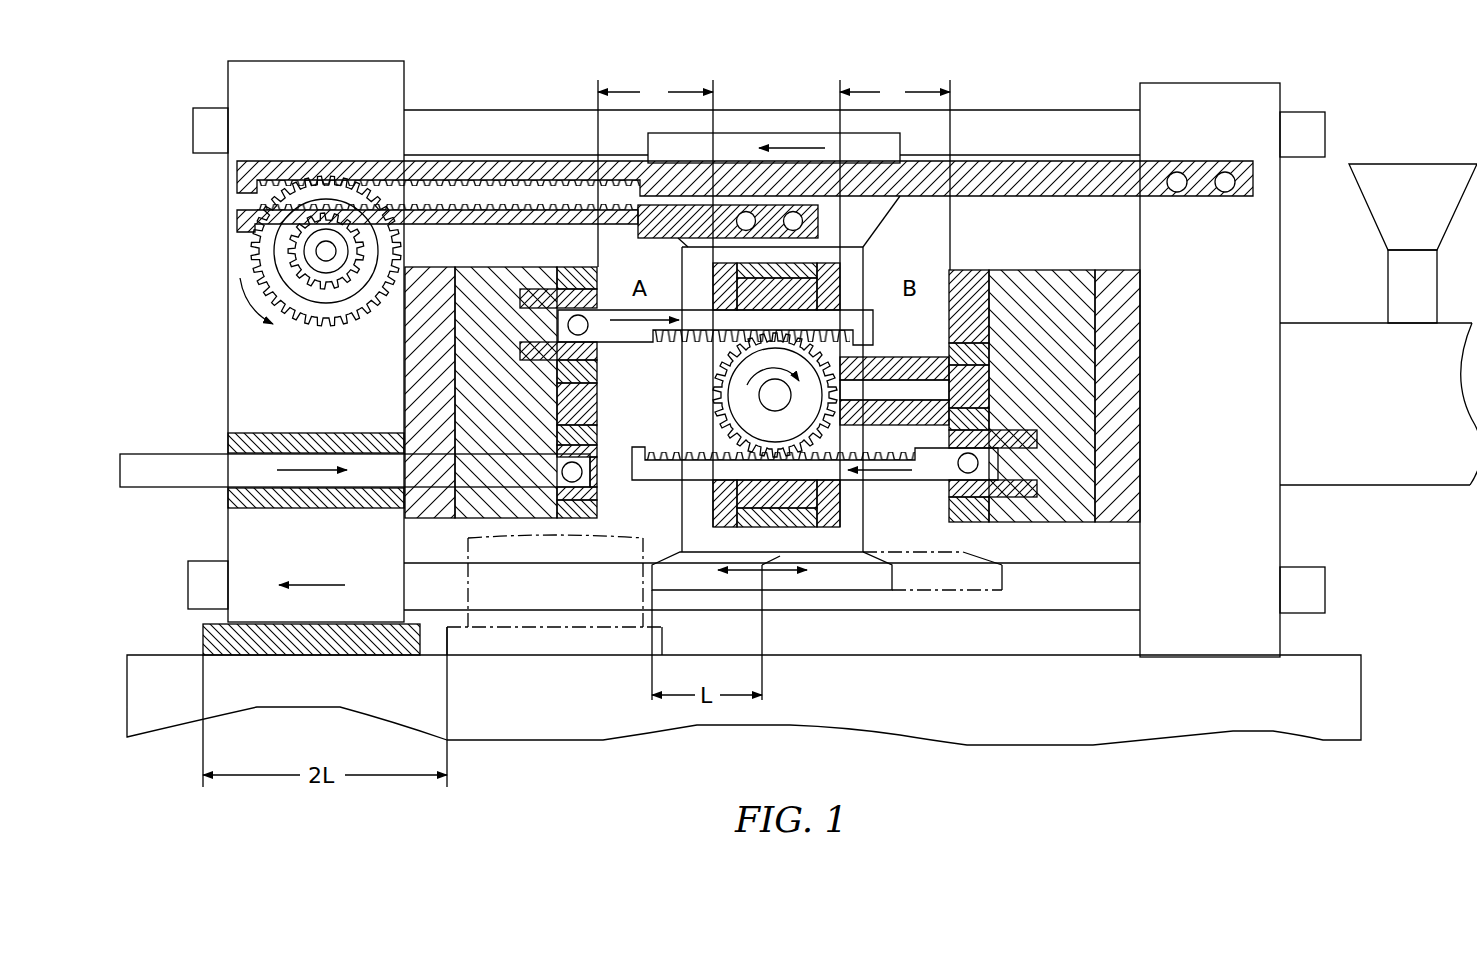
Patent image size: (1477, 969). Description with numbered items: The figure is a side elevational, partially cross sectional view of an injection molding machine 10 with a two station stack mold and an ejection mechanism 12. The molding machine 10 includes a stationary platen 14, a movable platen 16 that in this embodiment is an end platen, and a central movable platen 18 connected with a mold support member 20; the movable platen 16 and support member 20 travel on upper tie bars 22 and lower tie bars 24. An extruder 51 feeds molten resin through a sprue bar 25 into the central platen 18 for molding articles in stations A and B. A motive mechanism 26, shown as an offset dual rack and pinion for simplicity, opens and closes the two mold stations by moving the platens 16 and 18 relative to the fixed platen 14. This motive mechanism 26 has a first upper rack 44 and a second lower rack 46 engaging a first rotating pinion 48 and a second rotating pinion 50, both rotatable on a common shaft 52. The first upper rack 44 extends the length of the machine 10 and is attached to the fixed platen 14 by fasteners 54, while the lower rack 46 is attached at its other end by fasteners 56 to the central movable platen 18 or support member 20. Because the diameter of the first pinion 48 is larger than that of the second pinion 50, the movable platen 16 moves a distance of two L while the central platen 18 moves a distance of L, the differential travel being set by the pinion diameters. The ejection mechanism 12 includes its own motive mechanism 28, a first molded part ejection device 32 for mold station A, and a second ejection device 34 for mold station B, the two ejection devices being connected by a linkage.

The molding machine 10 is at (754, 58).
The ejection mechanism 12 is at (646, 404).
The stationary platen 14 is at (1218, 88).
The movable platen 16 is at (250, 530).
The central movable platen 18 is at (795, 515).
The mold support member 20 is at (855, 510).
The upper tie bars 22 is at (995, 122).
The lower tie bars 24 is at (590, 603).
The sprue bar 25 is at (900, 392).
The motive mechanism 26 is at (567, 70).
The motive mechanism 28 is at (192, 462).
The first molded part ejection device 32 is at (622, 497).
The second ejection device 34 is at (921, 492).
The first upper rack 44 is at (478, 163).
The second lower rack 46 is at (395, 206).
The first rotating pinion 48 is at (314, 189).
The second rotating pinion 50 is at (325, 213).
The extruder 51 is at (1322, 340).
The common shaft 52 is at (318, 250).
The fasteners 54 is at (1225, 172).
The fasteners 56 is at (793, 212).